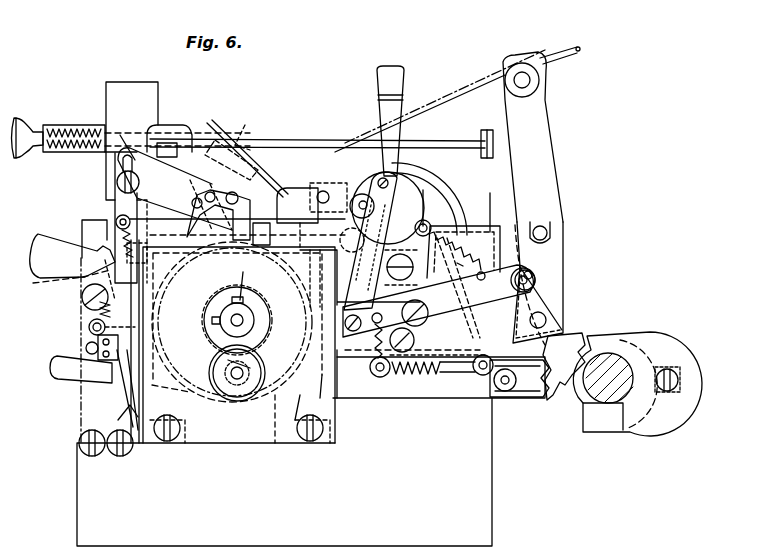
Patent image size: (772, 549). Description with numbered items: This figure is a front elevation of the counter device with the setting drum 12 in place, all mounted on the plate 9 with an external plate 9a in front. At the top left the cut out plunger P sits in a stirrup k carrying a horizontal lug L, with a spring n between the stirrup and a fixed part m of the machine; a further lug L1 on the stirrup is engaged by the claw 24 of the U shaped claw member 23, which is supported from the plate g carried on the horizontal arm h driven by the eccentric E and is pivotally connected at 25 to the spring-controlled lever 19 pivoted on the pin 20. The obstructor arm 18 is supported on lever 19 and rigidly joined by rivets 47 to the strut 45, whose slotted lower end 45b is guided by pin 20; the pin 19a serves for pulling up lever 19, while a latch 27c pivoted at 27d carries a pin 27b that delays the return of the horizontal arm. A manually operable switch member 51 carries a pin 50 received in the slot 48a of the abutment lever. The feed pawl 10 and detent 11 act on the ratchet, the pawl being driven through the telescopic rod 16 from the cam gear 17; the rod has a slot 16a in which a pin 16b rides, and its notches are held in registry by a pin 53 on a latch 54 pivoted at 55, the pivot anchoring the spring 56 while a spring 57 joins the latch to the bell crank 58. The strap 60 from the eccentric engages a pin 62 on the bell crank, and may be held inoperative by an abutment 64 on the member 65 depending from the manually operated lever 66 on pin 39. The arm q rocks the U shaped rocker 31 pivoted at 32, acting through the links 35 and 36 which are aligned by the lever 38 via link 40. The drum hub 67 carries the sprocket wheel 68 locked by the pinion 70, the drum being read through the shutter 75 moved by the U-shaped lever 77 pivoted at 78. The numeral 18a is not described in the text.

The plate 9 is at (311, 364).
The external plate 9a is at (210, 448).
The feed pawl 10 is at (232, 300).
The detent 11 is at (252, 278).
The setting drum 12 is at (302, 401).
The telescopic rod 16 is at (335, 398).
The slot 16a is at (520, 398).
The pin 16b is at (500, 392).
The cam gear 17 is at (603, 432).
The obstructor arm 18 is at (175, 189).
The pivot screw 18a is at (121, 157).
The spring-controlled lever 19 is at (122, 207).
The pin 19a is at (89, 327).
The pin 20 is at (112, 457).
The U shaped claw member 23 is at (218, 128).
The claw 24 is at (130, 125).
The pivot 25 is at (122, 181).
The pin 27b is at (86, 348).
The latch 27c is at (90, 392).
The pivot 27d is at (82, 448).
The U shaped rocker 31 is at (560, 238).
The pivot 32 is at (548, 302).
The link 35 is at (347, 374).
The link 36 is at (517, 269).
The lever 38 is at (378, 110).
The pin 39 is at (365, 190).
The link 40 is at (395, 170).
The strut 45 is at (130, 397).
The slot 45b is at (130, 417).
The rivets 47 is at (253, 165).
The slot 48a is at (69, 282).
The pin 50 is at (117, 288).
The switch member 51 is at (48, 240).
The pin 53 is at (478, 380).
The latch 54 is at (410, 380).
The pivot pin 55 is at (375, 380).
The spring 56 is at (430, 380).
The spring 57 is at (439, 301).
The bell crank 58 is at (408, 335).
The strap 60 is at (300, 186).
The pin 62 is at (425, 310).
The abutment 64 is at (300, 282).
The member 65 is at (430, 224).
The manually operated lever 66 is at (378, 80).
The hub 67 is at (265, 433).
The sprocket wheel 68 is at (215, 296).
The pinion 70 is at (212, 358).
The shutter 75 is at (240, 390).
The U-shaped lever 77 is at (164, 382).
The pivot 78 is at (324, 379).
The eccentric E is at (427, 185).
The lug L is at (188, 138).
The lug L1 is at (170, 143).
The cut out plunger P is at (30, 150).
The plate g is at (250, 135).
The horizontal arm h is at (360, 200).
The stirrup k is at (74, 126).
The fixed part m is at (128, 82).
The spring n is at (55, 128).
The arm q is at (538, 118).